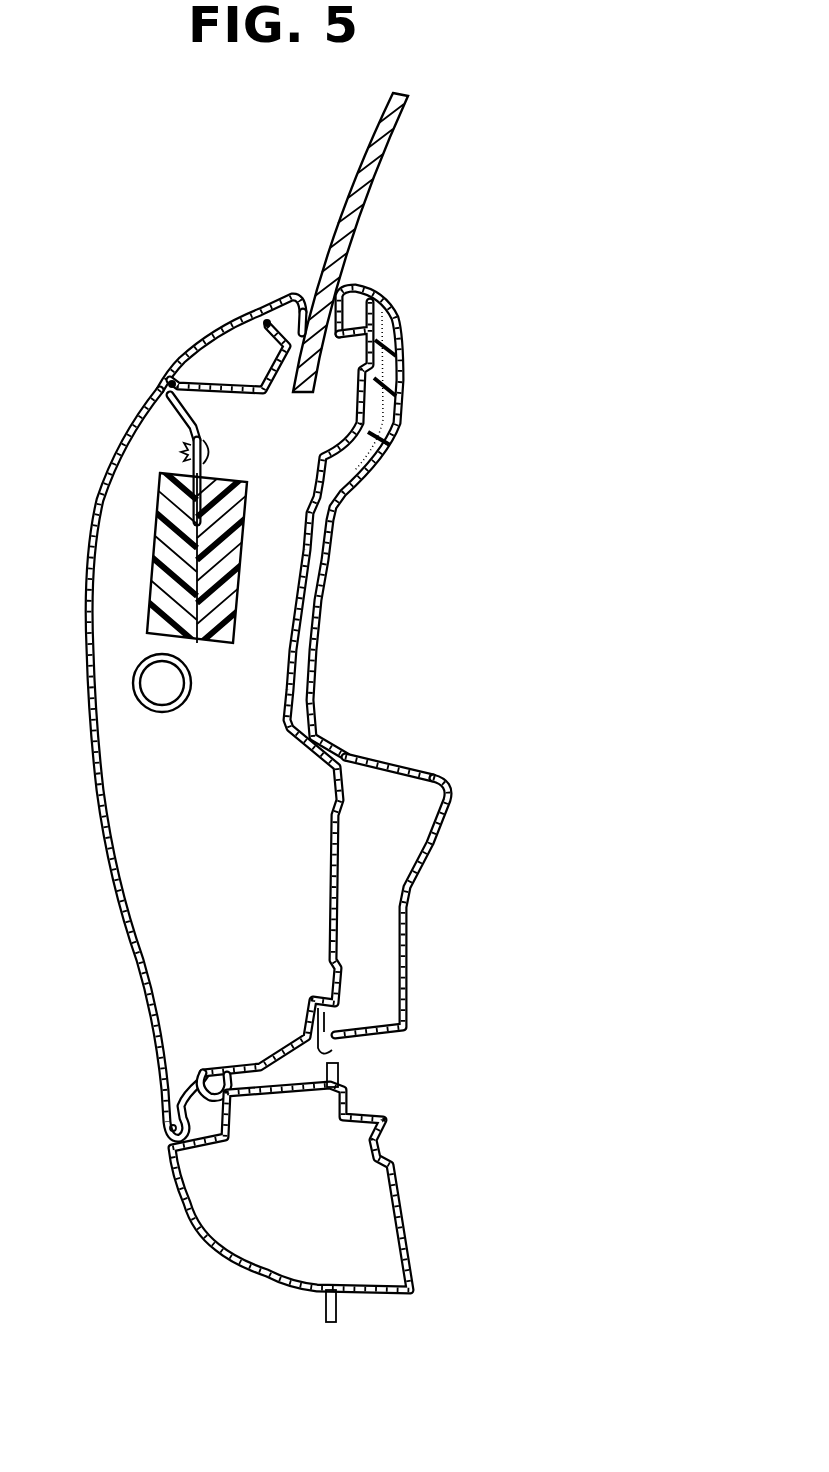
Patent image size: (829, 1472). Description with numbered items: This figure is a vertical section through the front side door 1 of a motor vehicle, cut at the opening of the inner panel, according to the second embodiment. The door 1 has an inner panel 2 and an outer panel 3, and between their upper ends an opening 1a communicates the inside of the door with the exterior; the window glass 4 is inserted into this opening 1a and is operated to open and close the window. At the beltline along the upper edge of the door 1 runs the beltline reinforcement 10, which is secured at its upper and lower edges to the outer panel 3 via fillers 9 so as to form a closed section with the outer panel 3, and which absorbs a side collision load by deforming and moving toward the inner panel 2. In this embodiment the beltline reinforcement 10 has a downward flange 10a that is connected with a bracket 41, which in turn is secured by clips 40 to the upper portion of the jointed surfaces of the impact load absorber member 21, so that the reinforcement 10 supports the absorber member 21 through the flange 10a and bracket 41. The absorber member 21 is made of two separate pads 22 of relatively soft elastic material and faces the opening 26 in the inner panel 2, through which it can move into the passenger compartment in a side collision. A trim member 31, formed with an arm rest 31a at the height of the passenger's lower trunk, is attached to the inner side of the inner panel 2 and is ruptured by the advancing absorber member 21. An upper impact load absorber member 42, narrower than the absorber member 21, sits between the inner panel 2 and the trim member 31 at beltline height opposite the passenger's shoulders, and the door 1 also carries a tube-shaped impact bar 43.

The front side door 1 is at (166, 355).
The opening 1a is at (306, 306).
The inner panel 2 is at (356, 466).
The outer panel 3 is at (108, 468).
The window glass 4 is at (370, 207).
The fillers 9 is at (264, 320).
The beltline reinforcement 10 is at (272, 398).
The flange 10a is at (180, 418).
The impact load absorber member 21 is at (208, 546).
The pads 22 is at (163, 553).
The opening 26 is at (328, 472).
The trim member 31 is at (436, 768).
The arm rest 31a is at (392, 760).
The clips 40 is at (208, 450).
The bracket 41 is at (204, 470).
The upper impact load absorber member 42 is at (395, 380).
The impact bar 43 is at (192, 698).